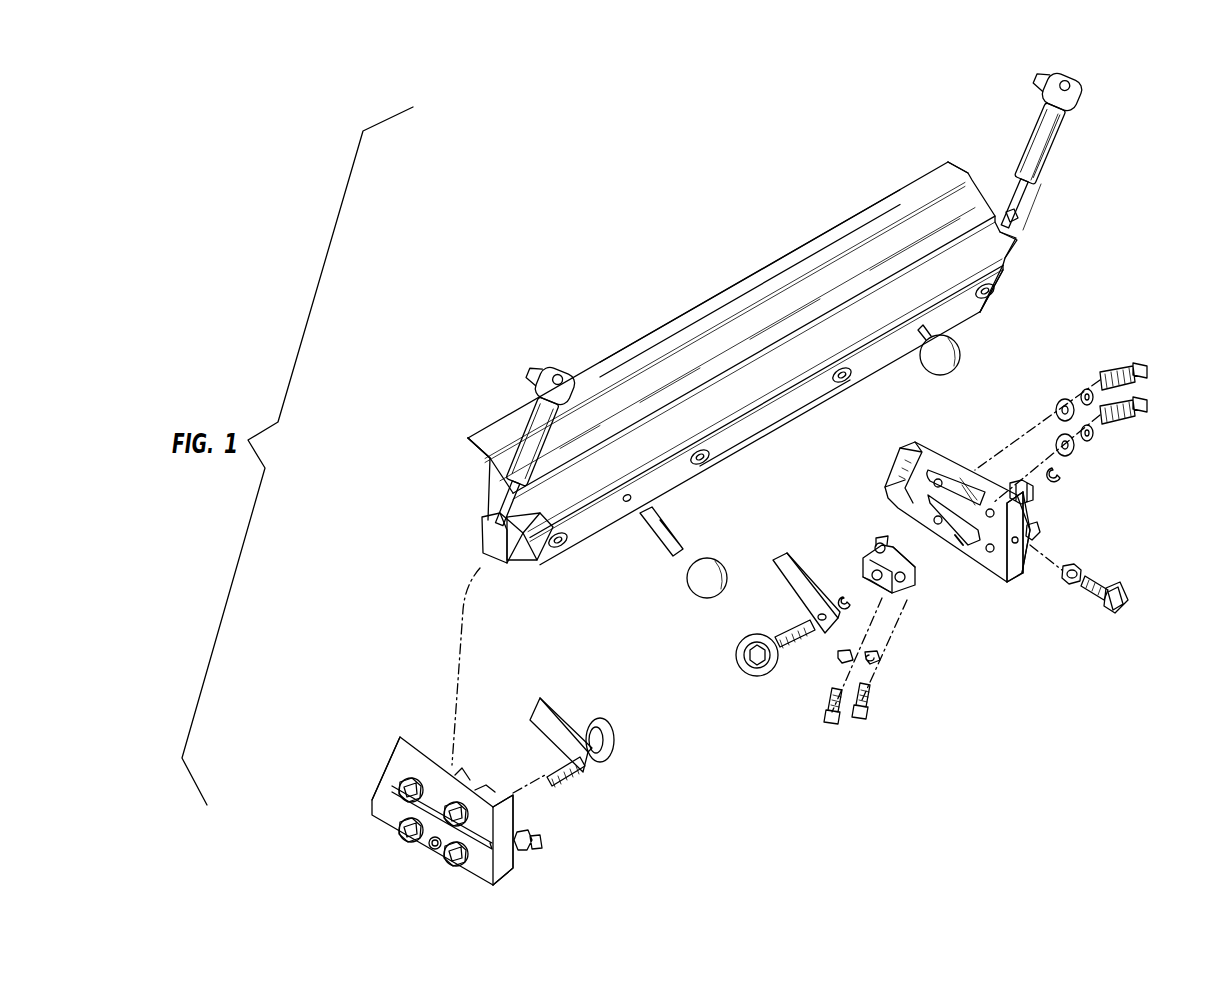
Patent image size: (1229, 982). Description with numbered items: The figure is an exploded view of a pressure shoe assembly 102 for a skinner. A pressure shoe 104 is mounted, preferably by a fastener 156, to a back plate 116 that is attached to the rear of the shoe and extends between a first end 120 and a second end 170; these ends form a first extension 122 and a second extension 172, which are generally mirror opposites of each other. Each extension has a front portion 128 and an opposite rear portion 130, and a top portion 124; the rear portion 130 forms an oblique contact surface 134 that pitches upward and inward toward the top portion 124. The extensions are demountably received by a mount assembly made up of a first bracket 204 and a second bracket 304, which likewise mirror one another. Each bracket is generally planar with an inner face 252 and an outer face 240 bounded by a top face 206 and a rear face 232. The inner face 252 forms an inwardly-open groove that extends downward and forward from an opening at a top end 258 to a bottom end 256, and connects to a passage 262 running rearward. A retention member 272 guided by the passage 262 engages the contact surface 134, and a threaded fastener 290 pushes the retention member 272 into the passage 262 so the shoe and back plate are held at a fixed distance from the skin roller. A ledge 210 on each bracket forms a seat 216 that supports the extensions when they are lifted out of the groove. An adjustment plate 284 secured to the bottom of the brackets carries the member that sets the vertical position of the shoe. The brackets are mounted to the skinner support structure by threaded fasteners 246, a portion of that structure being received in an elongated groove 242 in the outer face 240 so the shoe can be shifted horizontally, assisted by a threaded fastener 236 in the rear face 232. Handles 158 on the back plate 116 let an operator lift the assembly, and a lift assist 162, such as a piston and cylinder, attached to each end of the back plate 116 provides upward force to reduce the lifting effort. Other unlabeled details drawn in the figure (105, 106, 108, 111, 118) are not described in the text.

The pressure shoe assembly 102 is at (378, 448).
The pressure shoe 104 is at (841, 163).
The top surface 105 is at (658, 343).
The first end of fence body 106 is at (472, 448).
The second end of fence body 108 is at (950, 160).
The upper edge 111 is at (768, 265).
The back plate 116 is at (1032, 306).
The front face 118 is at (747, 398).
The first end 120 is at (438, 538).
The first extension 122 is at (430, 578).
The top portion 124 is at (1010, 212).
The front portion 128 is at (483, 522).
The rear portion 130 is at (521, 542).
The contact surface 134 is at (559, 547).
The fastener 156 is at (705, 463).
The handles 158 is at (935, 357).
The lift assist 162 is at (553, 365).
The second end 170 is at (1064, 211).
The second extension 172 is at (1048, 208).
The first bracket 204 is at (432, 771).
The top face 206 is at (1032, 520).
The ledge 210 is at (925, 475).
The seat 216 is at (962, 476).
The rear face 232 is at (1022, 575).
The threaded fastener 236 is at (1128, 594).
The outer face 240 is at (382, 785).
The groove 242 is at (447, 805).
The threaded fasteners 246 is at (1137, 362).
The inner face 252 is at (996, 563).
The bottom end 256 is at (903, 472).
The top end 258 is at (957, 512).
The passage 262 is at (956, 545).
The retention member 272 is at (771, 597).
The adjustment plate 284 is at (926, 600).
The fastener 290 is at (760, 660).
The second bracket 304 is at (1013, 473).